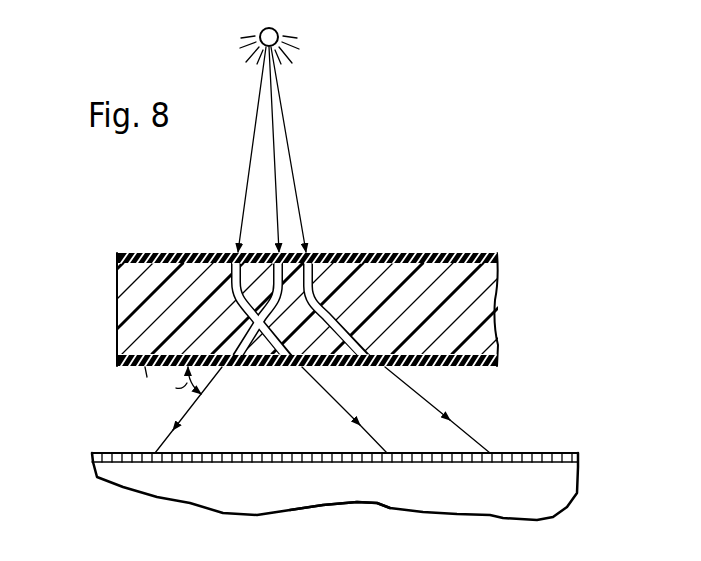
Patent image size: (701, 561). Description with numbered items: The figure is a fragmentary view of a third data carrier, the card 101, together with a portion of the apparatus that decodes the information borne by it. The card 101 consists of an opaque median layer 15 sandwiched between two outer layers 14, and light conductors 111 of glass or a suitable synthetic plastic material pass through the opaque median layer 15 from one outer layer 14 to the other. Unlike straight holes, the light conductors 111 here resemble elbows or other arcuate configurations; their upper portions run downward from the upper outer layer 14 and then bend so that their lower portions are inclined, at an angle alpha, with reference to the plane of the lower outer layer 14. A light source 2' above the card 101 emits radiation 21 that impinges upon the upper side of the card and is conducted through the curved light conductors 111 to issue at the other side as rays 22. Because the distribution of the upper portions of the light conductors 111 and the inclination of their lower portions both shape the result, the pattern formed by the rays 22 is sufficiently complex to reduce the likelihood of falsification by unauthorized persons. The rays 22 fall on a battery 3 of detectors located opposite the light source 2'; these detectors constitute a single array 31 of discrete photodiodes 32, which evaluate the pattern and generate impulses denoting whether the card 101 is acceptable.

The light source 2' is at (287, 35).
The radiation 21 is at (252, 163).
The card 101 is at (317, 298).
The opaque median layer 15 is at (482, 313).
The light conductors 111 is at (323, 290).
The outer layers 14 is at (455, 253).
The rays 22 is at (160, 440).
The array 31 is at (357, 469).
The photodiodes 32 is at (539, 455).
The battery of detectors 3 is at (335, 520).